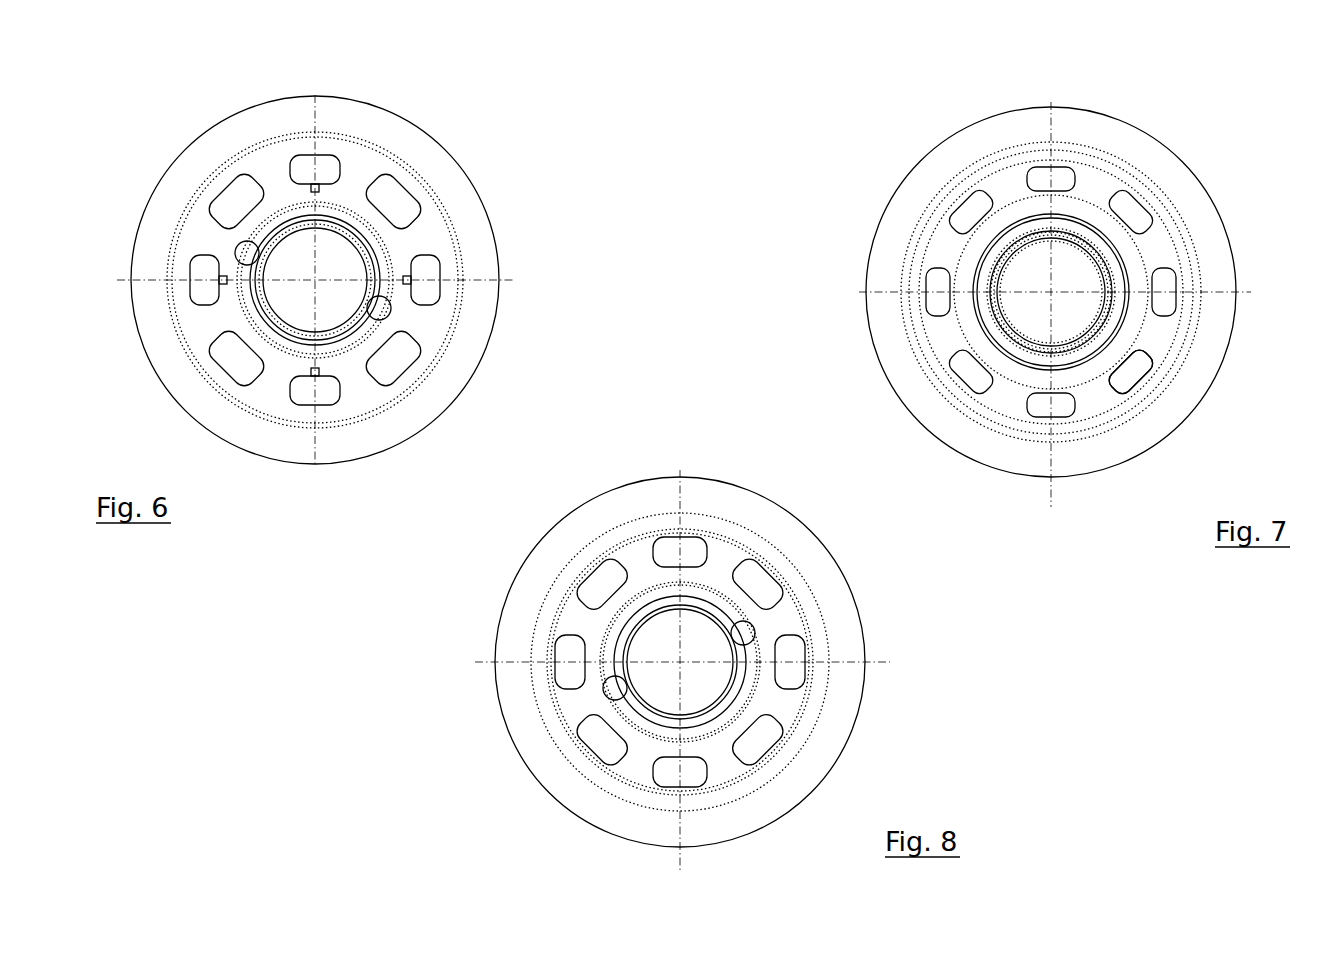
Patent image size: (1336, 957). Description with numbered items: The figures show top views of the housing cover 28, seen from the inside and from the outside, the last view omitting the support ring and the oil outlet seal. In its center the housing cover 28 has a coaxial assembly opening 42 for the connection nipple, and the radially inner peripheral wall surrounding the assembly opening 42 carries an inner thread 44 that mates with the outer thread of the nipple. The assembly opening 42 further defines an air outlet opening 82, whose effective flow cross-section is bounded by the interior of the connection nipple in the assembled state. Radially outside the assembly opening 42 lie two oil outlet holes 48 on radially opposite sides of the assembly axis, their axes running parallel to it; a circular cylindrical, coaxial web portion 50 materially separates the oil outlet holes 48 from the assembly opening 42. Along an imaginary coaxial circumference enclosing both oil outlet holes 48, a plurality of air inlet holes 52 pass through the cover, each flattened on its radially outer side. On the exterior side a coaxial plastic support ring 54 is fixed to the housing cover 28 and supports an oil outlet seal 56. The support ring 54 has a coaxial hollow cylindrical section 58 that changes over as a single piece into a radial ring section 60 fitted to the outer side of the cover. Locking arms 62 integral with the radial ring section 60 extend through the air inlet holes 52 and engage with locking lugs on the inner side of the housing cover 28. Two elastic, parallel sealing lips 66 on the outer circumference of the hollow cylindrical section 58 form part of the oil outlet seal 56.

In FIG. 6, the housing cover 28 is at (147, 157).
In FIG. 7, the housing cover 28 is at (1233, 122).
In FIG. 8, the housing cover 28 is at (521, 793).
In FIG. 6, the assembly opening 42 is at (338, 253).
In FIG. 7, the assembly opening 42 is at (1040, 252).
In FIG. 8, the assembly opening 42 is at (690, 630).
In FIG. 6, the inner thread 44 is at (272, 312).
In FIG. 7, the inner thread 44 is at (1003, 272).
In FIG. 8, the inner thread 44 is at (655, 700).
In FIG. 6, the oil outlet holes 48 is at (250, 252).
In FIG. 7, the oil outlet holes 48 is at (1110, 268).
In FIG. 8, the oil outlet holes 48 is at (745, 633).
In FIG. 6, the web portion 50 is at (255, 295).
In FIG. 7, the web portion 50 is at (1000, 320).
In FIG. 8, the web portion 50 is at (627, 683).
In FIG. 6, the air inlet holes 52 is at (393, 195).
In FIG. 7, the air inlet holes 52 is at (1133, 210).
In FIG. 8, the air inlet holes 52 is at (765, 585).
In FIG. 6, the support ring 54 is at (386, 353).
In FIG. 7, the support ring 54 is at (1113, 352).
In FIG. 7, the oil outlet seal 56 is at (1135, 290).
In FIG. 7, the hollow cylindrical section 58 is at (1083, 242).
In FIG. 7, the radial ring section 60 is at (1135, 325).
In FIG. 6, the locking arms 62 is at (248, 217).
In FIG. 7, the locking arms 62 is at (1050, 190).
In FIG. 7, the sealing lips 66 is at (1135, 298).
In FIG. 6, the air outlet opening 82 is at (309, 278).
In FIG. 7, the air outlet opening 82 is at (1083, 293).
In FIG. 8, the air outlet opening 82 is at (681, 654).